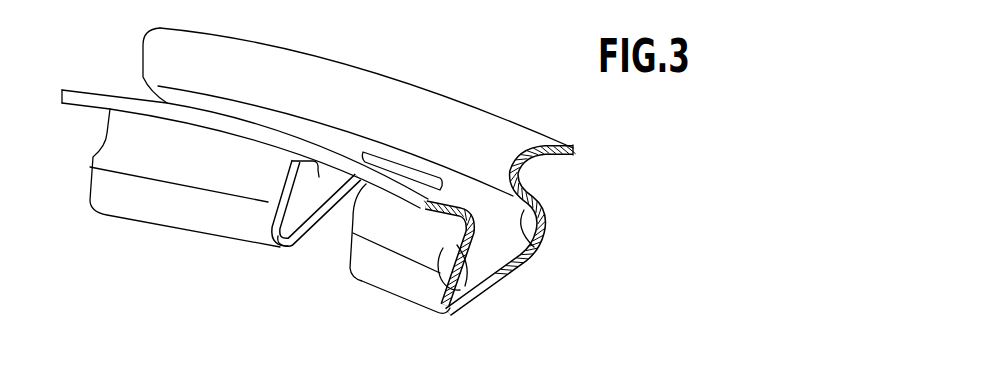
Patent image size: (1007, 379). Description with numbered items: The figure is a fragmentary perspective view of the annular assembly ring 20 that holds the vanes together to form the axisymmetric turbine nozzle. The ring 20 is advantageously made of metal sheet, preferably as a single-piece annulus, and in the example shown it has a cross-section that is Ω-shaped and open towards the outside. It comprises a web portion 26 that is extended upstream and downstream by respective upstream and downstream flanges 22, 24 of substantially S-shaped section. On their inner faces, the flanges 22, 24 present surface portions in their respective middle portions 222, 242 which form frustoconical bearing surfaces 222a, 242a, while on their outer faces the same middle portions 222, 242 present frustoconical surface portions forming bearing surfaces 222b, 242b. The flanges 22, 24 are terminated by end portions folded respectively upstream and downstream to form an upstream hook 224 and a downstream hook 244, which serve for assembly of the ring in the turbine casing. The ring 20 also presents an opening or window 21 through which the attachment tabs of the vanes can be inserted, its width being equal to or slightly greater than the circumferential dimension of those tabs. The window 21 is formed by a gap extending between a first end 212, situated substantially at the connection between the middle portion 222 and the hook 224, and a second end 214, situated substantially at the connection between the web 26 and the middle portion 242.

The annular assembly ring 20 is at (117, 222).
The window 21 is at (342, 248).
The upstream flange 22 is at (203, 214).
The downstream flange 24 is at (353, 92).
The web portion 26 is at (290, 247).
The first end 212 is at (296, 163).
The second end 214 is at (403, 167).
The middle portion 222 is at (457, 309).
The frustoconical bearing surface 222a is at (486, 254).
The bearing surface 222b is at (443, 249).
The upstream hook 224 is at (434, 212).
The middle portion 242 is at (517, 197).
The frustoconical bearing surface 242a is at (535, 250).
The bearing surface 242b is at (530, 196).
The downstream hook 244 is at (571, 152).